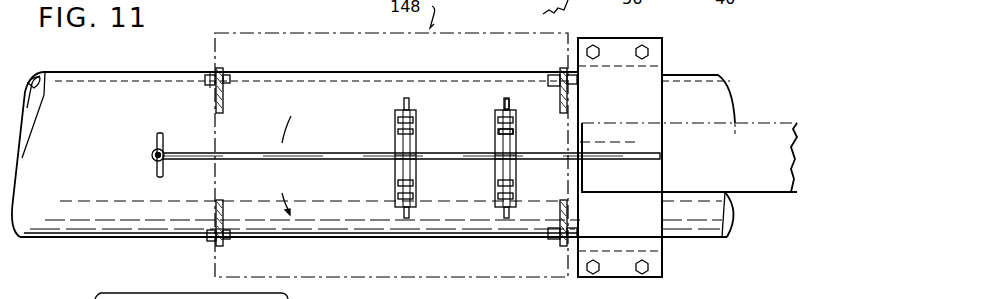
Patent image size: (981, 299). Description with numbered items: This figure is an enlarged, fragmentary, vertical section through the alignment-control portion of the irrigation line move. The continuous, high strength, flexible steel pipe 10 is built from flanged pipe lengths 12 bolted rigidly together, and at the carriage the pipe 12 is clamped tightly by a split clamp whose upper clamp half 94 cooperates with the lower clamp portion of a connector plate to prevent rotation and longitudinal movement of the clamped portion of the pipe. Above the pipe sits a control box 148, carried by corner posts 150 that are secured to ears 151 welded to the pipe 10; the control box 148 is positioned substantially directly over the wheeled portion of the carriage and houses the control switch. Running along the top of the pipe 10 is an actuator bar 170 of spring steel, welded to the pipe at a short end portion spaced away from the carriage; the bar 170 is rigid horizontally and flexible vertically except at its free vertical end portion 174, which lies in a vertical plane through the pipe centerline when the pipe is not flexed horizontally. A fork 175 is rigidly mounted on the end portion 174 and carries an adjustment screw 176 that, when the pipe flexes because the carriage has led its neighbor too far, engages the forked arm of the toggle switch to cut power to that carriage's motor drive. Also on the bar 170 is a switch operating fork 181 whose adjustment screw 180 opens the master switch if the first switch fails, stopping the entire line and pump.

The flexible steel pipe 10 is at (185, 70).
The flanged pipe length 12 is at (715, 74).
The clamp half 94 is at (660, 60).
The control box 148 is at (434, 27).
The corner post 150 is at (205, 89).
The ear 151 is at (223, 107).
The actuator bar 170 is at (764, 122).
The vertical end portion 174 is at (330, 150).
The fork 175 is at (498, 134).
The adjustment screw 176 is at (509, 101).
The adjustment screw 180 is at (395, 117).
The switch operating fork 181 is at (495, 119).